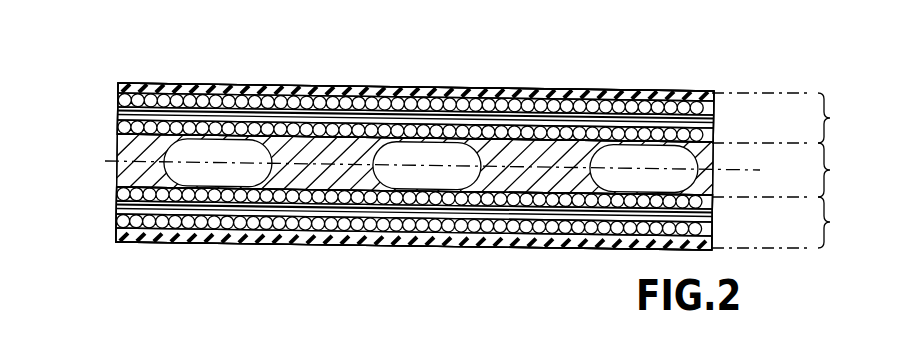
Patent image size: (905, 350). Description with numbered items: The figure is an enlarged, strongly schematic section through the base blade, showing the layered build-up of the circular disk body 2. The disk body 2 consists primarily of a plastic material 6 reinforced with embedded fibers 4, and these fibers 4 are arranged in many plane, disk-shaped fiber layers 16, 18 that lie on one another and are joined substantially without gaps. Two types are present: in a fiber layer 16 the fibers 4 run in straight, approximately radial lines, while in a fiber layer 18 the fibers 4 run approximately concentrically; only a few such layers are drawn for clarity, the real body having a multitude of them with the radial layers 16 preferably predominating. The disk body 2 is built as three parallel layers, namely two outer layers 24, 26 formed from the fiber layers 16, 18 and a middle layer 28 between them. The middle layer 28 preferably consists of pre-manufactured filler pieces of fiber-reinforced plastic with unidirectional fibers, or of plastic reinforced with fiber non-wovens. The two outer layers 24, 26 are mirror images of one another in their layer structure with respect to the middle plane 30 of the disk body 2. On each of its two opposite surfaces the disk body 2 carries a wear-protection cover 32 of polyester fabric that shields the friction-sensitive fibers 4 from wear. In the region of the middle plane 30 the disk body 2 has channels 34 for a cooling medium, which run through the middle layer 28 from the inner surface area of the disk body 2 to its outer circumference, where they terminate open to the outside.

The disk body 2 is at (603, 86).
The fibers 4 is at (213, 90).
The plastic material 6 is at (480, 128).
The fiber layer 16 is at (108, 187).
The fiber layer 18 is at (108, 112).
The outer layer 24 is at (485, 113).
The outer layer 26 is at (485, 218).
The middle layer 28 is at (459, 165).
The middle plane 30 is at (755, 170).
The wear-protection cover 32 is at (322, 112).
The channels 34 is at (240, 152).